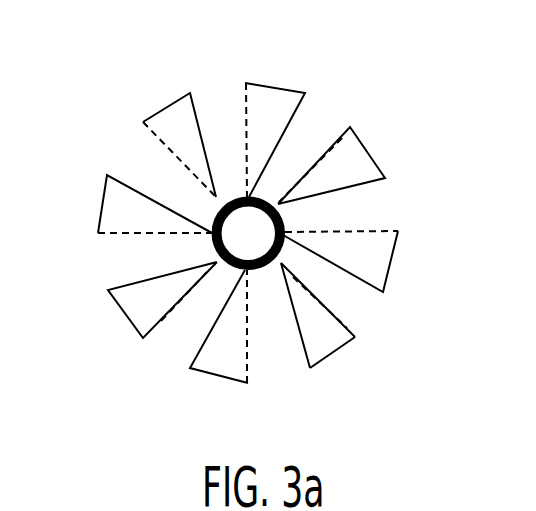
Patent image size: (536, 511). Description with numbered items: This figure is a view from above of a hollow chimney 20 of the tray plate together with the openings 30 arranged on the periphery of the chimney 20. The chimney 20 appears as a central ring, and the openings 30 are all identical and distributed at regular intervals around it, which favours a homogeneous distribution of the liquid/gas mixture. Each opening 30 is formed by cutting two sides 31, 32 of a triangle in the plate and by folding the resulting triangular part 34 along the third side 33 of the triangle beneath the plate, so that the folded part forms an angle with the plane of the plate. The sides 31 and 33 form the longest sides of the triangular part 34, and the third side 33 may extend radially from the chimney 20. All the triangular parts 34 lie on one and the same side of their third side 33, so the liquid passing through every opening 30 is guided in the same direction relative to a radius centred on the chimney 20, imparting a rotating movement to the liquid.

The hollow chimney 20 is at (168, 247).
The opening 30 is at (265, 237).
The first cut side of the triangle 31 is at (293, 320).
The second cut side of the triangle 32 is at (339, 345).
The third side of the triangle 33 is at (324, 317).
The triangular part 34 is at (313, 320).